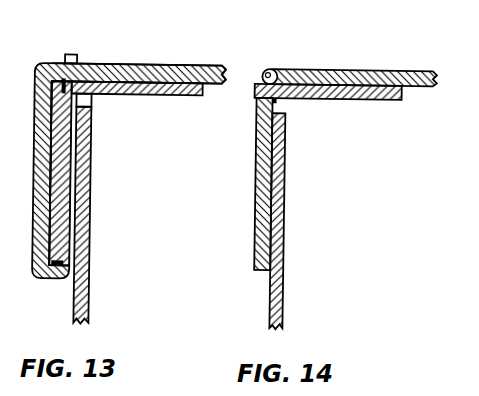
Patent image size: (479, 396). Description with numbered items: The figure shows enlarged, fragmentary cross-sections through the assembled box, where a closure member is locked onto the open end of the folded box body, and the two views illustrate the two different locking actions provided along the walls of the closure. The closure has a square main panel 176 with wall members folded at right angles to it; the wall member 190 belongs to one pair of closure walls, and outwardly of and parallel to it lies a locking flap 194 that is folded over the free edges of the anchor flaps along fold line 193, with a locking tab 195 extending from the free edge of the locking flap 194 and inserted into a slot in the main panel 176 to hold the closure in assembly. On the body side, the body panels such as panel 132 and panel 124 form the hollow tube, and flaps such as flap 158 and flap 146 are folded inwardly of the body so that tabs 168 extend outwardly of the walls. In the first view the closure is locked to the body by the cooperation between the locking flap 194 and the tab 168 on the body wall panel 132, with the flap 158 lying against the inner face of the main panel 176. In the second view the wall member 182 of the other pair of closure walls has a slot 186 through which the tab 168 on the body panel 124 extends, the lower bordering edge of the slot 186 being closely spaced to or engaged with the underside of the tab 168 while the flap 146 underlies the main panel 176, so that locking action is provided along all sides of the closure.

In FIG. 14, the panel 124 is at (287, 208).
In FIG. 13, the panel 132 is at (91, 245).
In FIG. 14, the flap 146 is at (368, 99).
In FIG. 13, the flap 158 is at (161, 94).
In FIG. 13, the tab 168 is at (50, 93).
In FIG. 13, the main panel 176 is at (163, 63).
In FIG. 14, the main panel 176 is at (378, 69).
In FIG. 14, the wall member 182 is at (257, 204).
In FIG. 14, the slot 186 is at (268, 68).
In FIG. 13, the wall member 190 is at (35, 167).
In FIG. 13, the fold line 193 is at (50, 208).
In FIG. 13, the locking flap 194 is at (66, 189).
In FIG. 13, the locking tab 195 is at (75, 53).